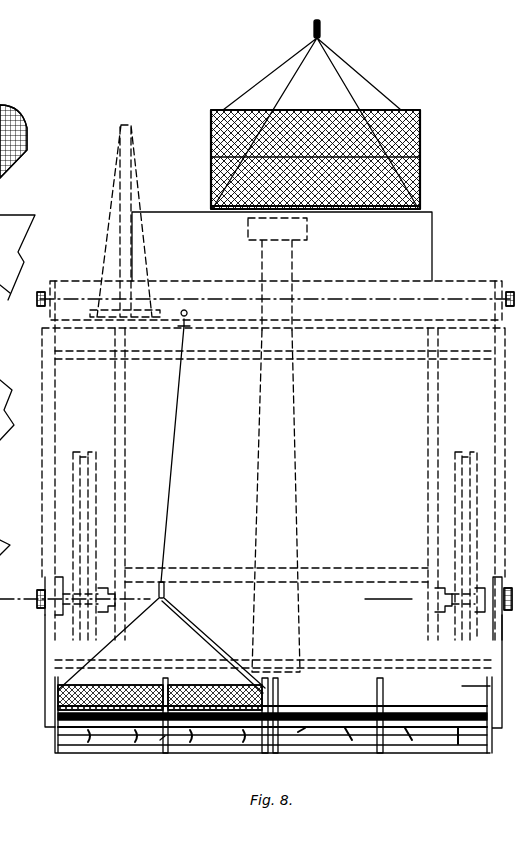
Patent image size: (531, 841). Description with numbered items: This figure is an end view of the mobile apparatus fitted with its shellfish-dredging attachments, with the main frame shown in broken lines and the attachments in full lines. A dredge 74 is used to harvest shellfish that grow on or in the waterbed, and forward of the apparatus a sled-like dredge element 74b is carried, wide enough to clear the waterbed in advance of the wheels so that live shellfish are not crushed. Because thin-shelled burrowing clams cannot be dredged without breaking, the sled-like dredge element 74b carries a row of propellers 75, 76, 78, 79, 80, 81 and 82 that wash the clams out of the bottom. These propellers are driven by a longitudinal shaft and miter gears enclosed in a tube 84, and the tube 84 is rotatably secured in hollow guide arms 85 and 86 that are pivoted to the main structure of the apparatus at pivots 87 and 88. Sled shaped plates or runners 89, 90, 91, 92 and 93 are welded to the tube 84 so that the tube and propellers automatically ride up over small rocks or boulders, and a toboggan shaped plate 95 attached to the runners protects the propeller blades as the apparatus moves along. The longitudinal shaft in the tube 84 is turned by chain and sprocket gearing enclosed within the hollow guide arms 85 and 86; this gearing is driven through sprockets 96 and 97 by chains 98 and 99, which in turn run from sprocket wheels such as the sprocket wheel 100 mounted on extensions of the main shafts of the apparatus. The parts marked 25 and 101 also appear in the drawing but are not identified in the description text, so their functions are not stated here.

The dredge 74 is at (140, 690).
The sled-like dredge element 74b is at (160, 740).
The column 25 is at (276, 501).
The sprocket wheel 100 is at (28, 299).
The bolt 101 is at (510, 290).
The chain 98 is at (55, 546).
The chain 99 is at (510, 418).
The sprocket 96 is at (40, 592).
The pivot 87 is at (56, 604).
The pivot 88 is at (490, 590).
The sprocket 97 is at (508, 600).
The hollow guide arm 85 is at (48, 660).
The hollow guide arm 86 is at (462, 686).
The sled shaped runner 89 is at (56, 745).
The sled shaped runner 93 is at (499, 684).
The sled shaped runner 90 is at (215, 690).
The sled shaped runner 91 is at (278, 696).
The sled shaped runner 92 is at (383, 698).
The tube 84 is at (272, 709).
The toboggan shaped plate 95 is at (432, 755).
The propeller 75 is at (90, 742).
The propeller 76 is at (136, 742).
The propeller 78 is at (243, 742).
The propeller 79 is at (298, 740).
The propeller 80 is at (350, 742).
The propeller 81 is at (410, 742).
The propeller 82 is at (458, 744).